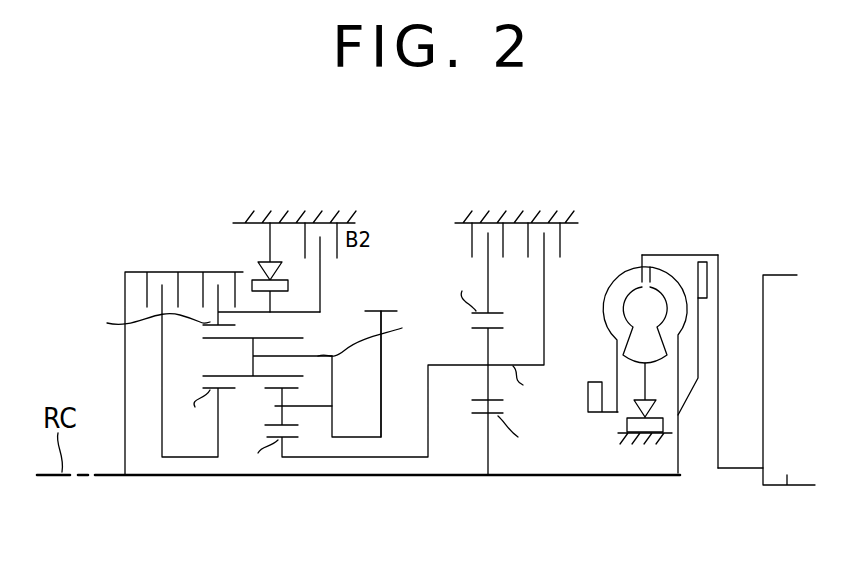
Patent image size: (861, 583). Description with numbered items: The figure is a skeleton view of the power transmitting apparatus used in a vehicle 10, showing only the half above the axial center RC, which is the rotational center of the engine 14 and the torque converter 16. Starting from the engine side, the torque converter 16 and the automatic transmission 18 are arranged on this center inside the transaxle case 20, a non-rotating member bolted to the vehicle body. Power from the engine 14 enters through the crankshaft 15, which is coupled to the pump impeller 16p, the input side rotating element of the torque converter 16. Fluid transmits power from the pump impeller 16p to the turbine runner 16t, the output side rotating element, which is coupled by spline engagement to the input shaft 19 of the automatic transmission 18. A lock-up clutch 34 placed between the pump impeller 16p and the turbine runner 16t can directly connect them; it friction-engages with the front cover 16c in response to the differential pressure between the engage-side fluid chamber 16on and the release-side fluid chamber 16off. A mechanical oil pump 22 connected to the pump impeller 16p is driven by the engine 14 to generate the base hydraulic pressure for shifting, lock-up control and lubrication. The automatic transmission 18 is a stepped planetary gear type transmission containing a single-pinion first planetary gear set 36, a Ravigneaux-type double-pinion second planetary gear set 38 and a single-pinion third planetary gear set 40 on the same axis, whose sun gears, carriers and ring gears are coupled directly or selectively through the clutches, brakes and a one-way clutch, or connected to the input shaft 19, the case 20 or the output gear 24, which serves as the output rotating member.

The vehicle 10 is at (723, 114).
The engine 14 is at (787, 480).
The crankshaft 15 is at (745, 468).
The torque converter 16 is at (710, 335).
The front cover 16c is at (718, 340).
The release-side fluid chamber 16off is at (700, 428).
The engage-side fluid chamber 16on is at (683, 267).
The pump impeller 16p is at (623, 278).
The turbine runner 16t is at (647, 257).
The automatic transmission 18 is at (536, 159).
The input shaft 19 is at (650, 474).
The transaxle case 20 is at (298, 217).
The mechanical oil pump 22 is at (590, 382).
The output gear 24 is at (388, 310).
The lock-up clutch 34 is at (708, 282).
The first planetary gear set 36 is at (486, 499).
The second planetary gear set 38 is at (284, 499).
The third planetary gear set 40 is at (214, 493).